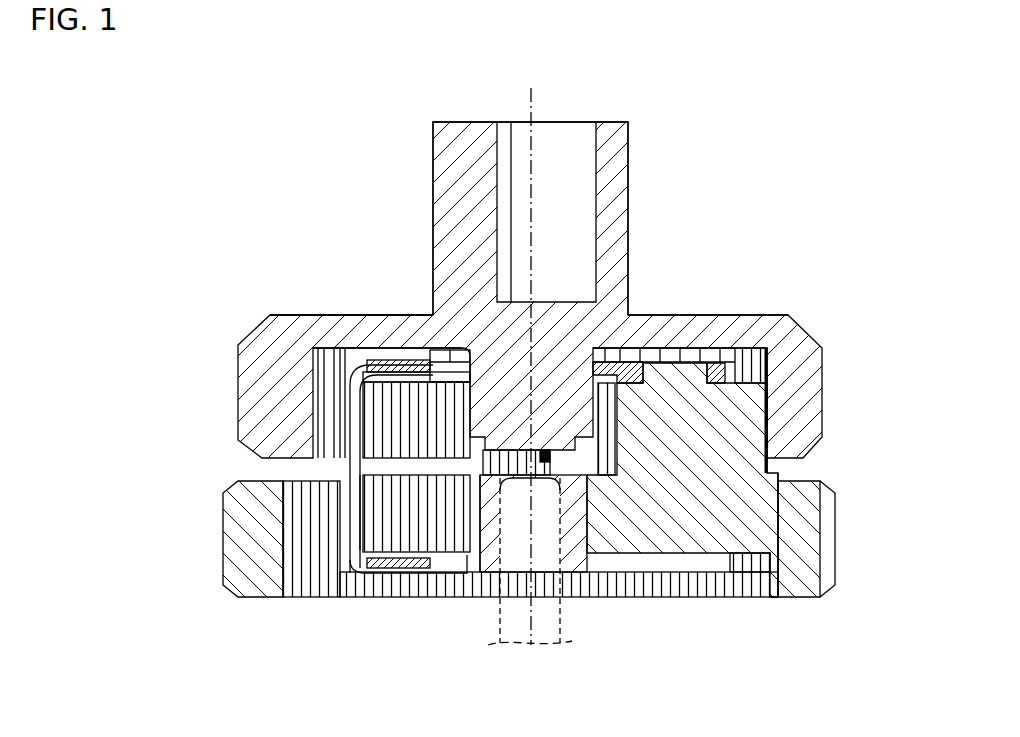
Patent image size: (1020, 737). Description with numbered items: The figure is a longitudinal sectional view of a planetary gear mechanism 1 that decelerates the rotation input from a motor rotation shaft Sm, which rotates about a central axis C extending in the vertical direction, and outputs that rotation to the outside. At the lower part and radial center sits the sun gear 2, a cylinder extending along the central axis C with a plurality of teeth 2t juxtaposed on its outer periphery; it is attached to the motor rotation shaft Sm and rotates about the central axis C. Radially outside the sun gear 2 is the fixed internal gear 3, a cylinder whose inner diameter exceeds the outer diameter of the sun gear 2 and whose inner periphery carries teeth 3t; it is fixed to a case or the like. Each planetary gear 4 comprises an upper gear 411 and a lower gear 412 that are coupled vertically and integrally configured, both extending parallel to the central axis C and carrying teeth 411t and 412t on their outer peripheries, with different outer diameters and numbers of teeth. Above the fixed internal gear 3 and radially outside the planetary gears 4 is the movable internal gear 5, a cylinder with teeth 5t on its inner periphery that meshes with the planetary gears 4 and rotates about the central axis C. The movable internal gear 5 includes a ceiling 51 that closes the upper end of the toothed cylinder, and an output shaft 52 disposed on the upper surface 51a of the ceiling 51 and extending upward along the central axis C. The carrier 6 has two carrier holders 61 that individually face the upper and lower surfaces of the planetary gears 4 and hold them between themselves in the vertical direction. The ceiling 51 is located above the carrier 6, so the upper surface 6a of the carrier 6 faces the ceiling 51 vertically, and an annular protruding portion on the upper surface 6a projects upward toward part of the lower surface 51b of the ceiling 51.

The planetary gear mechanism 1 is at (280, 136).
The sun gear 2 is at (490, 556).
The teeth 2t is at (470, 563).
The fixed internal gear 3 is at (226, 605).
The teeth 3t is at (305, 530).
The planetary gear 4 is at (786, 473).
The upper gear 411 is at (772, 430).
The teeth 411t is at (758, 400).
The lower gear 412 is at (788, 508).
The teeth 412t is at (770, 527).
The movable internal gear 5 is at (352, 213).
The ceiling 51 is at (401, 311).
The upper surface 51a is at (318, 314).
The lower surface 51b is at (330, 348).
The teeth 5t is at (320, 397).
The output shaft 52 is at (433, 148).
The carrier 6 is at (666, 350).
The upper surface 6a is at (693, 350).
The carrier holder 61 is at (350, 470).
The central axis C is at (528, 97).
The motor rotation shaft Sm is at (565, 622).